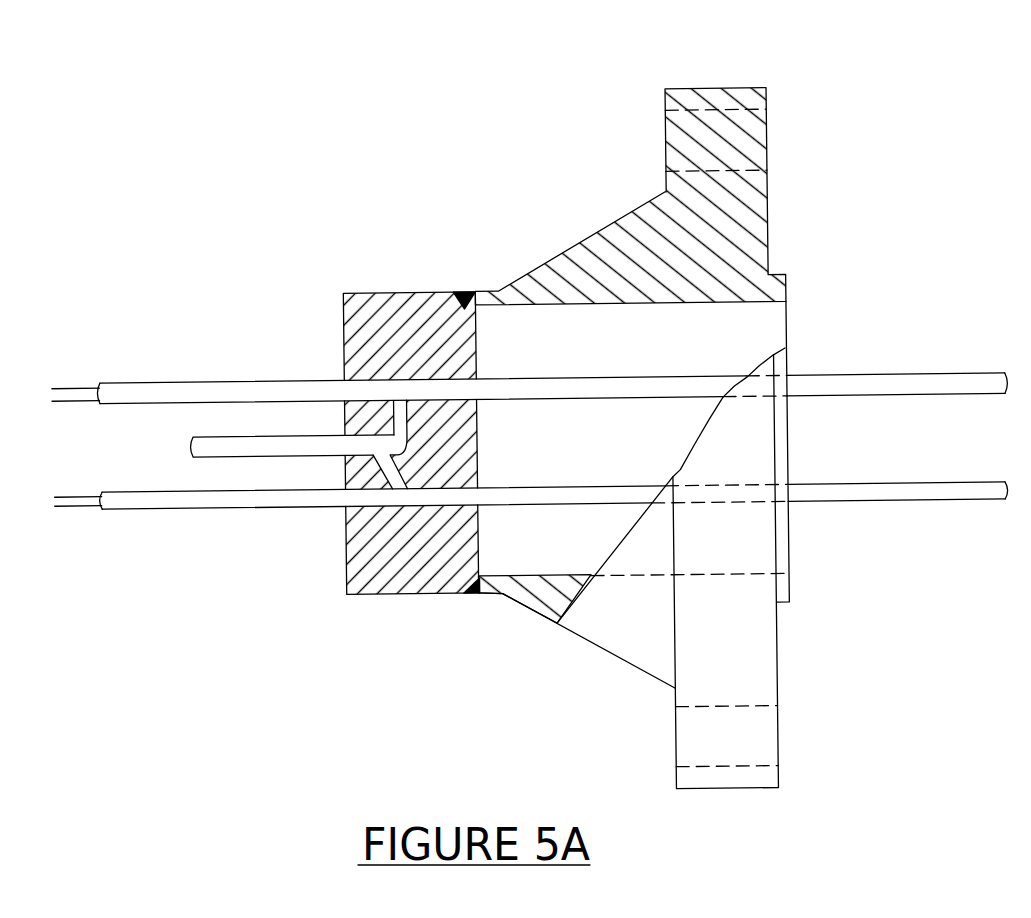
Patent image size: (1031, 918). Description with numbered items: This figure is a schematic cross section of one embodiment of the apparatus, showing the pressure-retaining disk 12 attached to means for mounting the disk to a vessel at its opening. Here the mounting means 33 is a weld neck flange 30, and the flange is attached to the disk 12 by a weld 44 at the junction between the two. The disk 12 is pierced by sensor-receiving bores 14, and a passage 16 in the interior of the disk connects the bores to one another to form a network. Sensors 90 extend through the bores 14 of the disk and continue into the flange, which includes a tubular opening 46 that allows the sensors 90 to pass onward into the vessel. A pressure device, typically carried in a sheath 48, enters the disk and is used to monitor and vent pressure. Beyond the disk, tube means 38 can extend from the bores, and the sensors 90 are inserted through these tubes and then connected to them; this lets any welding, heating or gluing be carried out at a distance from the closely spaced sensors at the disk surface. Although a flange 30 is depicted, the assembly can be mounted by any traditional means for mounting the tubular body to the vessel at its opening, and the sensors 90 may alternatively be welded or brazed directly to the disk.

The pressure-retaining disk 12 is at (377, 291).
The sensor-receiving bores 14 is at (345, 362).
The passage 16 is at (345, 468).
The weld neck flange 30 is at (713, 89).
The mounting means 33 is at (612, 139).
The tube means 38 is at (912, 378).
The weld 44 is at (465, 291).
The tubular opening 46 is at (630, 330).
The sheath 48 is at (192, 443).
The sensors 90 is at (76, 383).